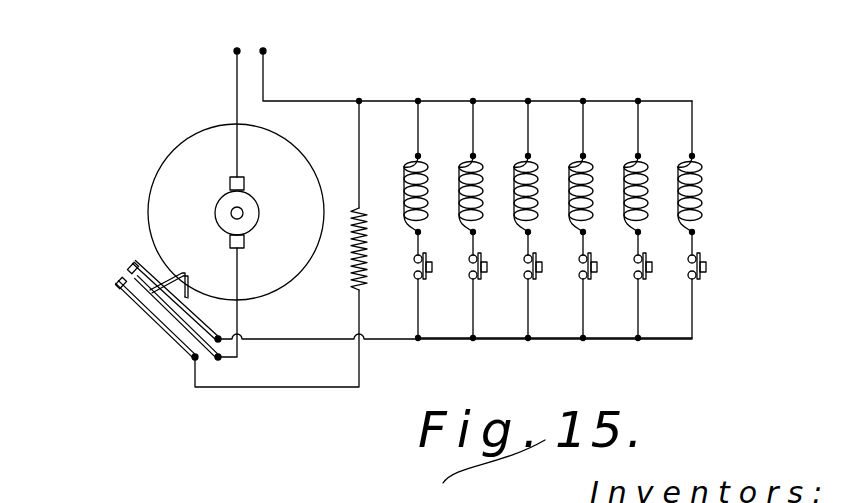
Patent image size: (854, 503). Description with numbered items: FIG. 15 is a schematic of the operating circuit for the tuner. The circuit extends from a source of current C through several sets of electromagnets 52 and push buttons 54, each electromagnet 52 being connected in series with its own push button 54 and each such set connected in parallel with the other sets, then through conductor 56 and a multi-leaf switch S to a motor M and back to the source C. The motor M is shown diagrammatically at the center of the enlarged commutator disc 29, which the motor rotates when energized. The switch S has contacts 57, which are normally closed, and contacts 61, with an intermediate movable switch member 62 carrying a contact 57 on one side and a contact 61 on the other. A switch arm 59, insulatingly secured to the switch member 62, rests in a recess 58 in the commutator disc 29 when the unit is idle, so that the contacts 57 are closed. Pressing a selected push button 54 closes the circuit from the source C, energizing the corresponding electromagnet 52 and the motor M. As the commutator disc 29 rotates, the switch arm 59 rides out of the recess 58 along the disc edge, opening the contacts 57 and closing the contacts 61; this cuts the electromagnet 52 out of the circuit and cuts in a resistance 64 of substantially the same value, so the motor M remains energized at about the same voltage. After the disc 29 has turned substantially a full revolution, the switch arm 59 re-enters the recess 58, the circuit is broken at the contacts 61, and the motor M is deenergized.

The source of current C is at (250, 46).
The commutator disc 29 is at (206, 134).
The motor M is at (249, 209).
The multi-leaf switch S is at (144, 293).
The switch contacts 57 is at (135, 262).
The recess 58 is at (188, 271).
The switch arm 59 is at (188, 297).
The contacts 61 is at (127, 270).
The intermediate movable switch member 62 is at (187, 333).
The resistance 64 is at (353, 262).
The electromagnet 52 is at (702, 180).
The push button 54 is at (705, 267).
The conductor 56 is at (518, 339).